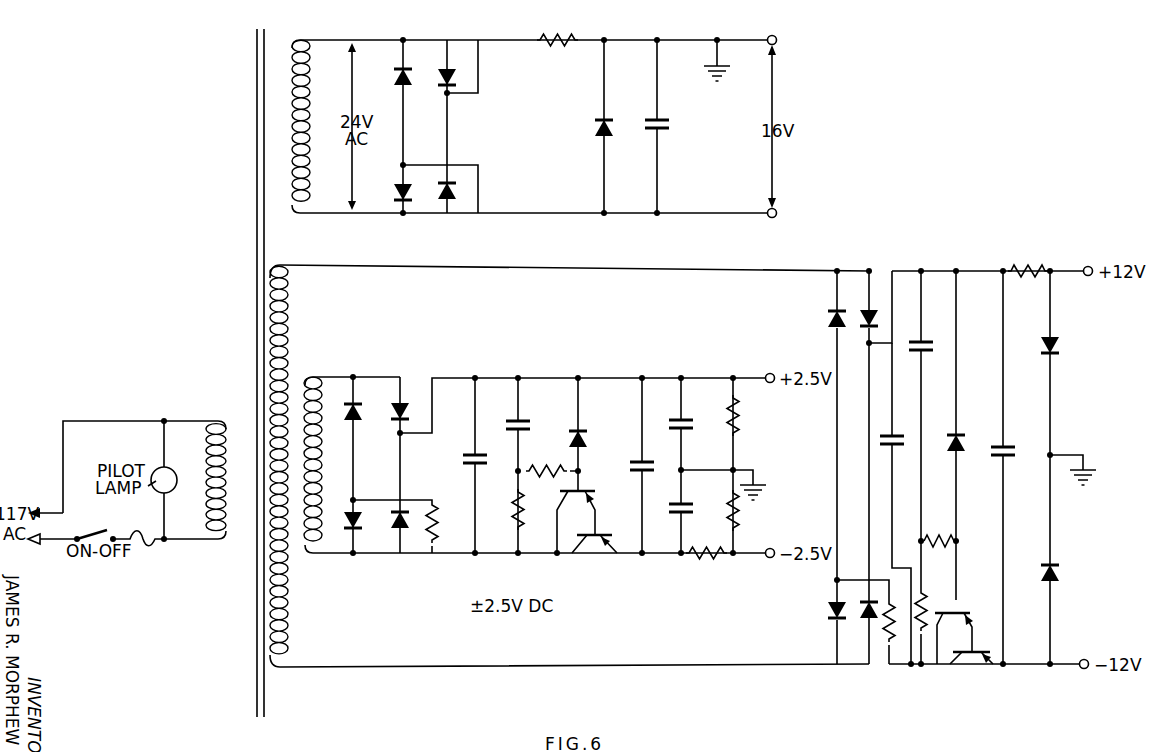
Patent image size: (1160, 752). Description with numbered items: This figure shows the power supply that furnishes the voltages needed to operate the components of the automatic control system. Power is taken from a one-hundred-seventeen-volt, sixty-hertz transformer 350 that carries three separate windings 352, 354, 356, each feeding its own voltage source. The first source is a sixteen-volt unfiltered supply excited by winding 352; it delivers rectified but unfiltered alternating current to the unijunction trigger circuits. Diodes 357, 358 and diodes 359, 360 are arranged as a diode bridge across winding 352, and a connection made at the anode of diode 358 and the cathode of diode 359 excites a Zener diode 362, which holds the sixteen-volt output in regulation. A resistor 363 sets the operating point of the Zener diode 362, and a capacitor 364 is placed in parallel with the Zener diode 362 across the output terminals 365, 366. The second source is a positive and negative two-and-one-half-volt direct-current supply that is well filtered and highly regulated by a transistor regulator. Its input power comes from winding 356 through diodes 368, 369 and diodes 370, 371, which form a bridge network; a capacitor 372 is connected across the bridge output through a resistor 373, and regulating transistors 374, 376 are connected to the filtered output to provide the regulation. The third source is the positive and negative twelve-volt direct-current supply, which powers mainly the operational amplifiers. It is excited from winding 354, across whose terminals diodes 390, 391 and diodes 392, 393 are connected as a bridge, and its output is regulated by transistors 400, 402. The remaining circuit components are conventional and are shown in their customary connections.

The transformer 350 is at (232, 376).
The winding 352 is at (304, 84).
The winding 354 is at (291, 309).
The winding 356 is at (329, 477).
The diode 357 is at (401, 71).
The diode 358 is at (401, 180).
The diode 359 is at (451, 62).
The diode 360 is at (448, 202).
The Zener diode 362 is at (598, 129).
The resistor 363 is at (551, 29).
The capacitor 364 is at (659, 130).
The output terminal 365 is at (779, 34).
The output terminal 366 is at (779, 207).
The diode 368 is at (356, 424).
The diode 369 is at (356, 506).
The diode 370 is at (406, 396).
The diode 371 is at (404, 538).
The capacitor 372 is at (474, 456).
The resistor 373 is at (433, 509).
The regulating transistor 374 is at (597, 497).
The regulating transistor 376 is at (597, 545).
The diode 390 is at (834, 306).
The diode 391 is at (830, 609).
The diode 392 is at (871, 303).
The diode 393 is at (862, 622).
The transistor 400 is at (958, 611).
The transistor 402 is at (973, 658).